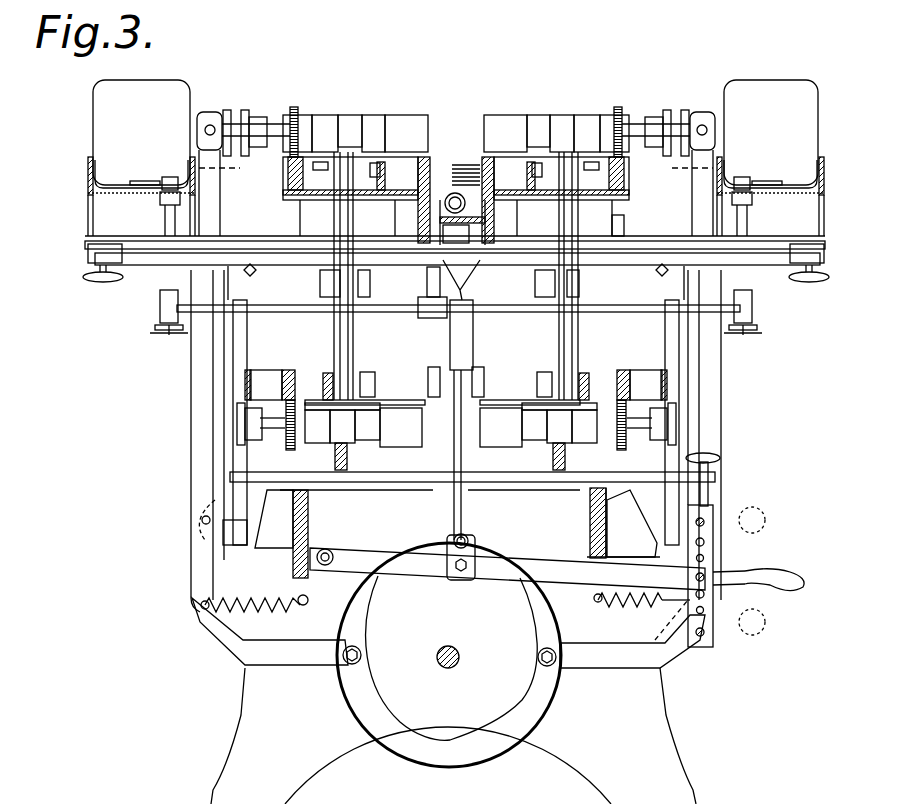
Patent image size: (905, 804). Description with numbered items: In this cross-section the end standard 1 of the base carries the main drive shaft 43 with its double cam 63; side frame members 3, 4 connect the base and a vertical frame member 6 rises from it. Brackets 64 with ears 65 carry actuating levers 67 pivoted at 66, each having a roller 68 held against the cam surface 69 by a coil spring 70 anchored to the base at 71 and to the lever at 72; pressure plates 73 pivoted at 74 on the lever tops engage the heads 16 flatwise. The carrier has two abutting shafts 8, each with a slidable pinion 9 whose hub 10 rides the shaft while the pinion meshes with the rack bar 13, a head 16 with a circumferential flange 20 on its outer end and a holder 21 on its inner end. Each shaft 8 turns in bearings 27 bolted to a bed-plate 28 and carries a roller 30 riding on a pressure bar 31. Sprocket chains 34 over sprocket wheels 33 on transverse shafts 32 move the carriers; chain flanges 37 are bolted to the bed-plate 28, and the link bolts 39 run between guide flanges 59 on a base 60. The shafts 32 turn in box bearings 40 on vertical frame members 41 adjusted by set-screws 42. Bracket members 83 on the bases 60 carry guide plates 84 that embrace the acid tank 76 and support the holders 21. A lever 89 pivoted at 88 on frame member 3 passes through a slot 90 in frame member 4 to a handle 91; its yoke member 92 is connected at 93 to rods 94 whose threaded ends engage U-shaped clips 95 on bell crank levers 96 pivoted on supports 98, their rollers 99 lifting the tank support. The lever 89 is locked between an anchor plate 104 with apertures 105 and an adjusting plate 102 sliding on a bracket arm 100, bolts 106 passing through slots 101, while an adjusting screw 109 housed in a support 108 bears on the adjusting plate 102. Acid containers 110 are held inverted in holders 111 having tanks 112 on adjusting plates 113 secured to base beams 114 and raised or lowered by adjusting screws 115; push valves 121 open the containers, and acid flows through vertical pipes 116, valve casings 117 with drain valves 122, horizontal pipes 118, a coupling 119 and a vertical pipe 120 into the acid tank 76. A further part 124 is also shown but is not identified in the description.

The end standard 1 is at (240, 712).
The side frame member 3 is at (285, 530).
The side frame member 4 is at (595, 518).
The vertical frame member 6 is at (262, 372).
The shaft 8 is at (276, 122).
The pinion 9 is at (294, 107).
The hub 10 is at (305, 115).
The rack bar 13 is at (292, 192).
The head 16 is at (227, 110).
The circumferential flange 20 is at (245, 108).
The holder 21 is at (398, 115).
The bearing 27 is at (330, 115).
The bed-plate 28 is at (365, 415).
The roller 30 is at (350, 118).
The pressure bar 31 is at (343, 470).
The shaft 32 is at (315, 300).
The sprocket wheel 33 is at (360, 216).
The sprocket chain 34 is at (342, 370).
The flange 37 is at (310, 195).
The bolt 39 is at (525, 196).
The box bearing 40 is at (244, 272).
The vertical frame member 41 is at (624, 226).
The set-screw 42 is at (250, 275).
The main drive shaft 43 is at (448, 670).
The flange 59 is at (385, 176).
The base 60 is at (320, 196).
The double cam 63 is at (410, 745).
The bracket 64 is at (225, 496).
The ear 65 is at (222, 540).
The pivot 66 is at (202, 520).
The actuating lever 67 is at (192, 410).
The roller 68 is at (346, 664).
The cam surface 69 is at (480, 730).
The coil spring 70 is at (262, 598).
The spring anchorage 71 is at (303, 606).
The spring attachment 72 is at (200, 605).
The pressure plate 73 is at (225, 112).
The pivot 74 is at (205, 130).
The acid tank 76 is at (462, 165).
The bracket member 83 is at (410, 160).
The guide plate 84 is at (424, 157).
The pivot 88 is at (327, 548).
The lever 89 is at (420, 575).
The slot 90 is at (595, 548).
The handle 91 is at (787, 572).
The yoke member 92 is at (447, 556).
The pivot 93 is at (466, 540).
The rod 94 is at (454, 510).
The U-shaped clip 95 is at (484, 392).
The bell crank lever 96 is at (473, 330).
The support 98 is at (428, 386).
The roller 99 is at (461, 281).
The bracket arm 100 is at (655, 548).
The slot 101 is at (708, 538).
The adjusting plate 102 is at (706, 598).
The anchor plate 104 is at (650, 603).
The aperture 105 is at (708, 555).
The bolt 106 is at (705, 520).
The support 108 is at (712, 480).
The adjusting screw 109 is at (708, 455).
The container 110 is at (95, 100).
The holder 111 is at (88, 200).
The tank 112 is at (90, 172).
The adjusting plate 113 is at (135, 236).
The base beam 114 is at (150, 263).
The adjusting screw 115 is at (100, 282).
The vertical pipe 116 is at (160, 300).
The valve casing 117 is at (160, 322).
The horizontal pipe 118 is at (247, 335).
The coupling 119 is at (433, 300).
The vertical pipe 120 is at (420, 300).
The push valve 121 is at (168, 178).
The valve 122 is at (165, 333).
The bearing 124 is at (245, 385).